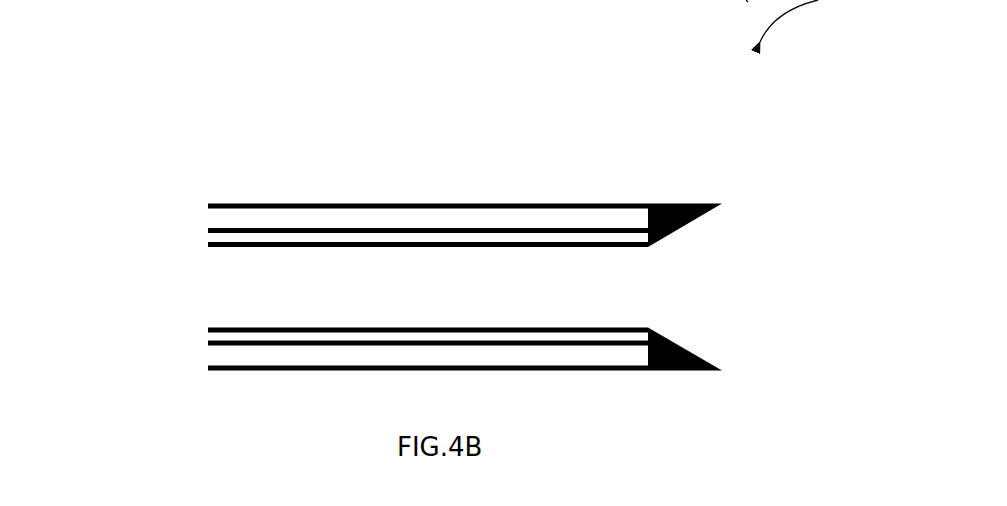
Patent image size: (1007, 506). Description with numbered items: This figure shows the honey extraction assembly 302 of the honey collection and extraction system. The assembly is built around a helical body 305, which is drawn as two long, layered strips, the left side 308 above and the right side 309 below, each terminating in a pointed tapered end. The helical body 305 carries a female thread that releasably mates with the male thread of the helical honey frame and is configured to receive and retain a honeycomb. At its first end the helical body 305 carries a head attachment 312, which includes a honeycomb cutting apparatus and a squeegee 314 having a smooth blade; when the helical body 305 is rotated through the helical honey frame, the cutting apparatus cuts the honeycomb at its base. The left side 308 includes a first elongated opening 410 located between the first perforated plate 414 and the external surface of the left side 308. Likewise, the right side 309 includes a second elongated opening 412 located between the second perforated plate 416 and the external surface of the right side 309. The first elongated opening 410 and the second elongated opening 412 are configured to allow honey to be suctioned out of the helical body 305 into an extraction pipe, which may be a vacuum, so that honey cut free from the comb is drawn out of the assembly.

The honey extraction assembly 302 is at (800, 21).
The helical body 305 is at (458, 199).
The left side 308 is at (397, 164).
The right side 309 is at (419, 369).
The head attachment 312 is at (715, 199).
The squeegee 314 is at (701, 227).
The first elongated opening 410 is at (240, 212).
The first perforated plate 414 is at (226, 240).
The second perforated plate 416 is at (235, 333).
The second elongated opening 412 is at (225, 357).